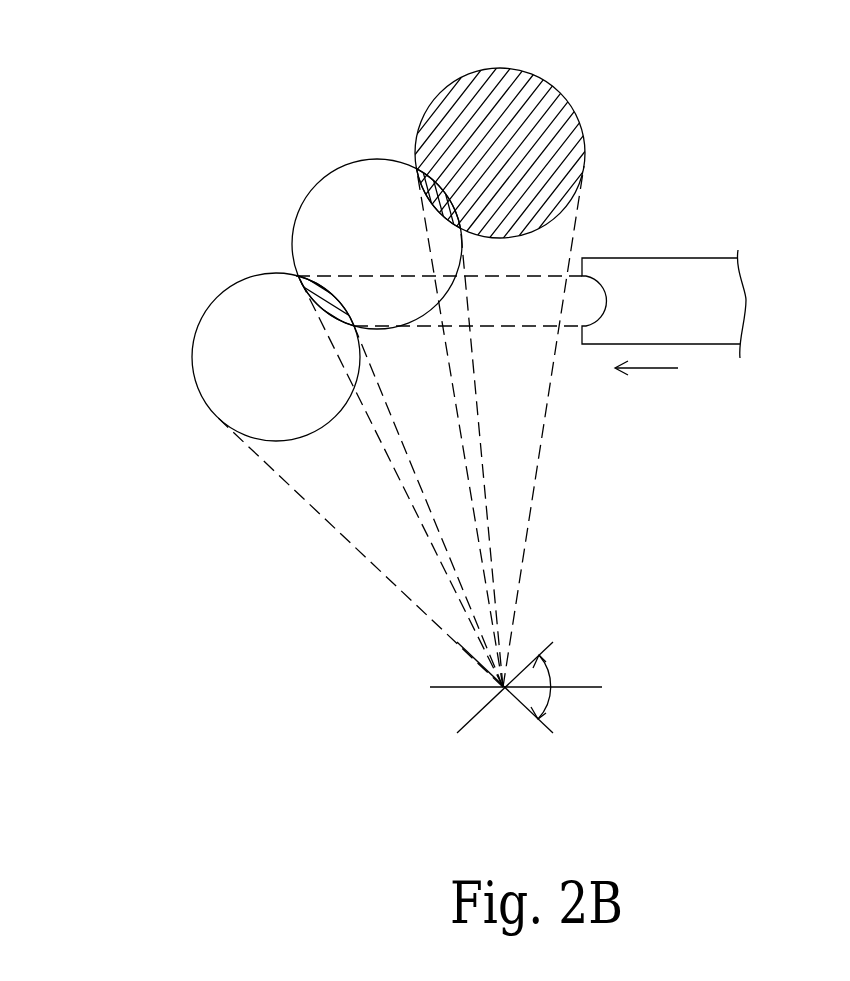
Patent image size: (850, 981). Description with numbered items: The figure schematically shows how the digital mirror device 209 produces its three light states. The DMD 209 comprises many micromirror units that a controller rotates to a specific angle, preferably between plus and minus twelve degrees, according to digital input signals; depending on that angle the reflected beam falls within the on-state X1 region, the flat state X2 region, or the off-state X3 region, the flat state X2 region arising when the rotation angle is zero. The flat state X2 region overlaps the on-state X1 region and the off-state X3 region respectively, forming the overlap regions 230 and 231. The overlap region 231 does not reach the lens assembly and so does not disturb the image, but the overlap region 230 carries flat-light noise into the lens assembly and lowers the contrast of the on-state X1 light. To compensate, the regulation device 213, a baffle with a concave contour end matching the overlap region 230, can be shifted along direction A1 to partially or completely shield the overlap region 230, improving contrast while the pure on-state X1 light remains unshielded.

The digital mirror device 209 is at (467, 737).
The regulation device 213 is at (737, 325).
The overlap region 230 is at (307, 292).
The overlap region 231 is at (420, 180).
The on-state light X1 is at (192, 358).
The flat state light X2 is at (293, 245).
The off-state light X3 is at (498, 67).
The direction A1 is at (665, 367).